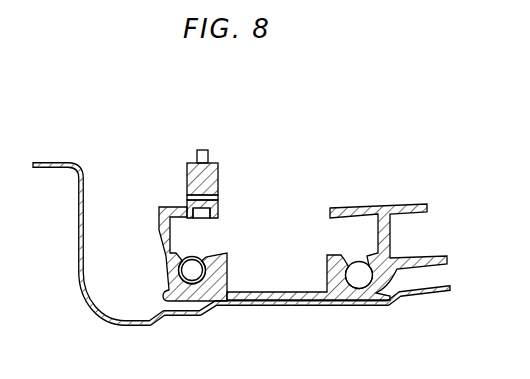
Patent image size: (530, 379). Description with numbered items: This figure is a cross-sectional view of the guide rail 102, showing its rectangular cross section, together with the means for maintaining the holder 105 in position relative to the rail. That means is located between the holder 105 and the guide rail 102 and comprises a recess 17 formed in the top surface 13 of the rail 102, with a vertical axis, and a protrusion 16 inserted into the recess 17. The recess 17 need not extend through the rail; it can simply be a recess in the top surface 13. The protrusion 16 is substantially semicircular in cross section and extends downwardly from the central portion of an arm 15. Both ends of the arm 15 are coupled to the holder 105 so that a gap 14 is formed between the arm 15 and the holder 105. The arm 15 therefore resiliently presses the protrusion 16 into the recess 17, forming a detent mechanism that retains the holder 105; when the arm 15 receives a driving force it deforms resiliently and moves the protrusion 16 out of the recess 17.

The top surface 13 is at (172, 207).
The gap 14 is at (220, 194).
The arm 15 is at (219, 200).
The protrusion 16 is at (205, 219).
The recess 17 is at (194, 212).
The guide rail 102 is at (359, 207).
The holder 105 is at (218, 161).